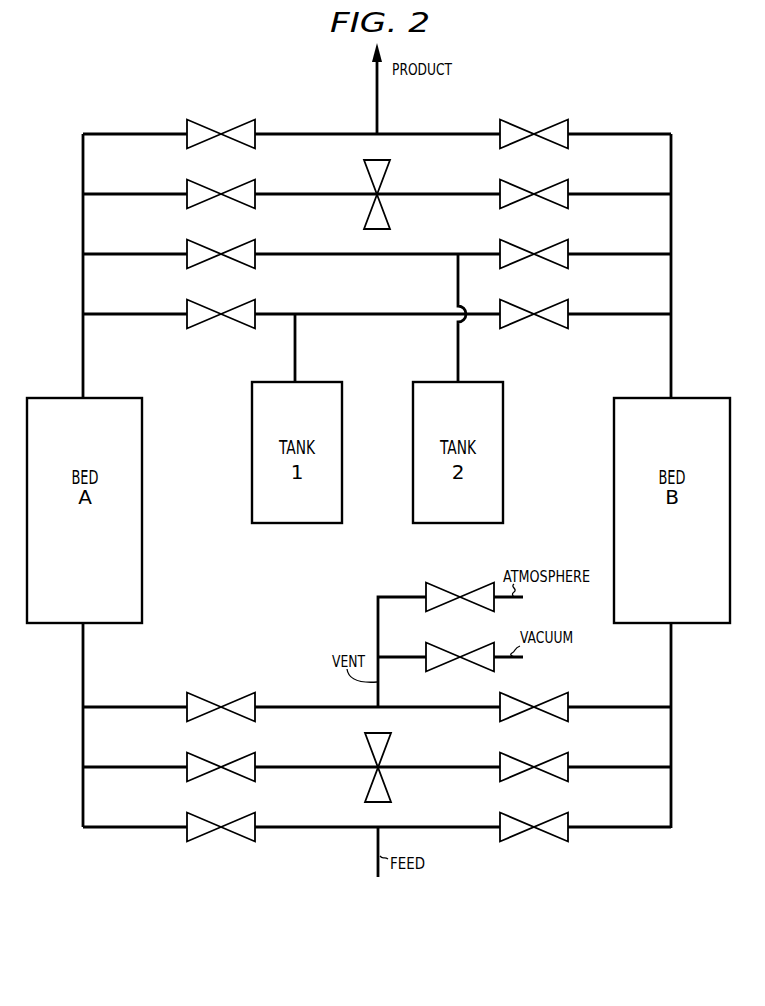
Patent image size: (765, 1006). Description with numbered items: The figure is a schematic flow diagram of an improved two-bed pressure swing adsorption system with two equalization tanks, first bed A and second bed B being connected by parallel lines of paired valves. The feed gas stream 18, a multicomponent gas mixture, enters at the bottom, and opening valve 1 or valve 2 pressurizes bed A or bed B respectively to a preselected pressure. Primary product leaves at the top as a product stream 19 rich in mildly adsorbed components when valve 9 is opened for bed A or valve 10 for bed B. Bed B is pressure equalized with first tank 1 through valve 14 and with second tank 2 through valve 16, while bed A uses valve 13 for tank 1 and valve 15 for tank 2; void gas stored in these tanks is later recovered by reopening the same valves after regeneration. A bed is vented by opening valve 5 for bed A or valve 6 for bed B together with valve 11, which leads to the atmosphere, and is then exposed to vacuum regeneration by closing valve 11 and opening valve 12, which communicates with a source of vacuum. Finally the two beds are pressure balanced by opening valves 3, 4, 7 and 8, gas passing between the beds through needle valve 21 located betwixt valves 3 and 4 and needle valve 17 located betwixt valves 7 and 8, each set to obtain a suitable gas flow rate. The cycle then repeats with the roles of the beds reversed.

The valve 1 is at (221, 826).
The valve 2 is at (534, 826).
The valve 3 is at (221, 766).
The valve 4 is at (534, 766).
The valve 5 is at (221, 706).
The valve 6 is at (534, 706).
The valve 7 is at (221, 193).
The valve 8 is at (534, 193).
The valve 9 is at (221, 133).
The valve 10 is at (534, 133).
The valve 11 is at (460, 596).
The valve 12 is at (460, 656).
The valve 13 is at (221, 313).
The valve 14 is at (534, 313).
The valve 15 is at (221, 253).
The valve 16 is at (534, 253).
The needle valve 17 is at (364, 176).
The feed gas stream 18 is at (378, 852).
The product stream 19 is at (377, 78).
The needle valve 21 is at (365, 745).